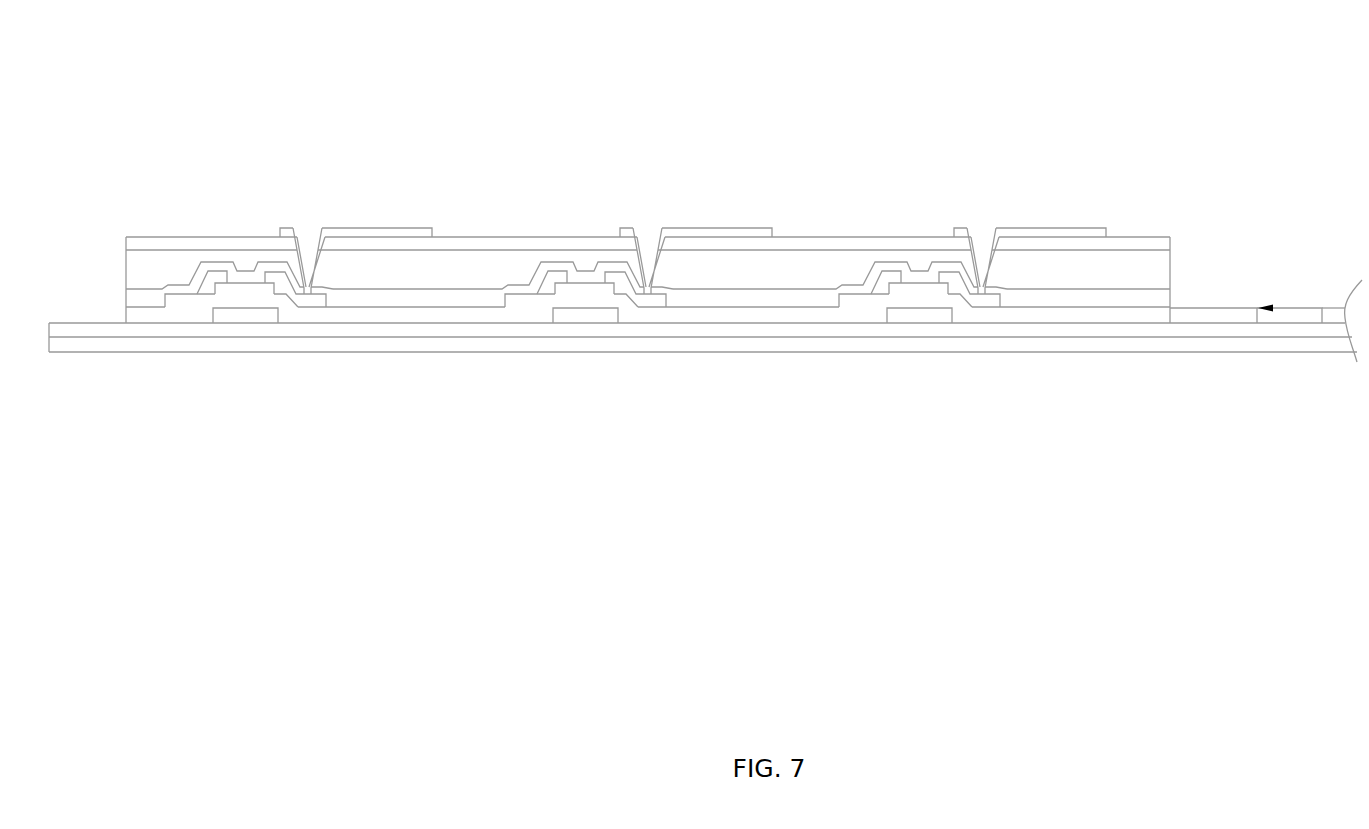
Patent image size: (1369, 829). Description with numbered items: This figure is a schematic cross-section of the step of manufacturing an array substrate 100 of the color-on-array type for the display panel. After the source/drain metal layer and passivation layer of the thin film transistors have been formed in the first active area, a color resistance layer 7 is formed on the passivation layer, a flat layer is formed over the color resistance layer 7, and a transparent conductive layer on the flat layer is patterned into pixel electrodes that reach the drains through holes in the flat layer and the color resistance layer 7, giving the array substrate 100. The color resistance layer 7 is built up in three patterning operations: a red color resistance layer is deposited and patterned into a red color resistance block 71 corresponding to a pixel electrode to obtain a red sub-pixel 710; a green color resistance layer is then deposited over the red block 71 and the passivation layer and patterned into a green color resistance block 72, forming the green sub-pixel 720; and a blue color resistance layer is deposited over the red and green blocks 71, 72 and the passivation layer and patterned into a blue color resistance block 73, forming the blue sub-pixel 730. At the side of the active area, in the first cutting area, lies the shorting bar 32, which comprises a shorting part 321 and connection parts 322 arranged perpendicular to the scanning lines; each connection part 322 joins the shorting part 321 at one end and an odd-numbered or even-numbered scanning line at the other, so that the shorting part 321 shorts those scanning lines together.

The array substrate 100 is at (650, 167).
The color resistance layer 7 is at (1170, 263).
The red color resistance block 71 is at (476, 268).
The green color resistance block 72 is at (808, 277).
The blue color resistance block 73 is at (1118, 265).
The red sub-pixel 710 is at (340, 352).
The green sub-pixel 720 is at (723, 353).
The blue sub-pixel 730 is at (1023, 353).
The shorting bar 32 is at (1267, 425).
The shorting part 321 is at (1288, 317).
The connection part 322 is at (1213, 313).